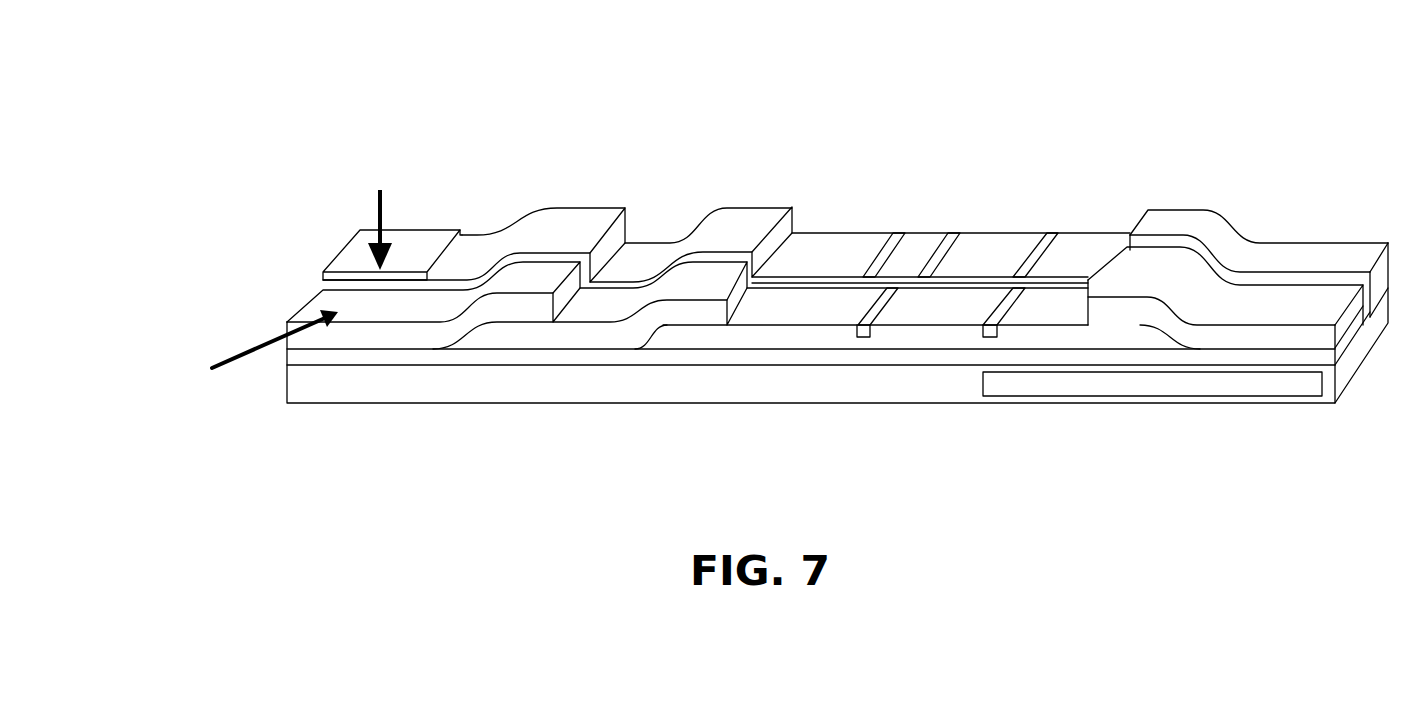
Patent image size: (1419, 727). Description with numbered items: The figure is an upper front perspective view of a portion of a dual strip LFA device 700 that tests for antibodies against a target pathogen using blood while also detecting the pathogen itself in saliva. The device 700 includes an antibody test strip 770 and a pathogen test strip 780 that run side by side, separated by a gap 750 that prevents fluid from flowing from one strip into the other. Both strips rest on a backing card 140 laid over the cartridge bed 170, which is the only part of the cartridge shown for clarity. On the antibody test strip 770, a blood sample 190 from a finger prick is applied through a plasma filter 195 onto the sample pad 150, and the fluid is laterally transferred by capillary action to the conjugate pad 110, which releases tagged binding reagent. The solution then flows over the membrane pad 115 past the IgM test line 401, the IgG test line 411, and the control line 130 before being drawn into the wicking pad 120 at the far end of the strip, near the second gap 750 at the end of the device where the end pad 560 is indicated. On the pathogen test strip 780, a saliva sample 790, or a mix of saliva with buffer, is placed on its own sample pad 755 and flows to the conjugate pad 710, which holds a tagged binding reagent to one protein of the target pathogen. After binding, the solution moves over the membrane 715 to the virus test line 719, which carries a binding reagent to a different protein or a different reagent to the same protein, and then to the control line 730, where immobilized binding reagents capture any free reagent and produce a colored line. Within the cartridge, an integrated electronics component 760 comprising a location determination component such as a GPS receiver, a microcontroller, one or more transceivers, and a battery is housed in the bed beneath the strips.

The dual strip LFA device 700 is at (229, 92).
The test strip 770 is at (313, 272).
The test strip 780 is at (282, 320).
The saliva sample 790 is at (212, 354).
The blood sample 190 is at (381, 205).
The plasma filter 195 is at (410, 237).
The gap 750 is at (1388, 208).
The sample pad 150 is at (585, 217).
The conjugate pad 110 is at (740, 223).
The membrane pad 115 is at (1020, 248).
The IgM test line 401 is at (893, 233).
The IgG test line 411 is at (952, 233).
The control line 130 is at (1050, 245).
The wicking pad 120 is at (1298, 260).
The strip end pad 560 is at (1317, 313).
The backing card 140 is at (312, 360).
The cartridge bed 170 is at (325, 385).
The sample pad 755 is at (532, 280).
The conjugate pad 710 is at (690, 285).
The membrane 715 is at (758, 313).
The test line 719 is at (860, 327).
The control line 730 is at (993, 323).
The electronics component 760 is at (1112, 396).